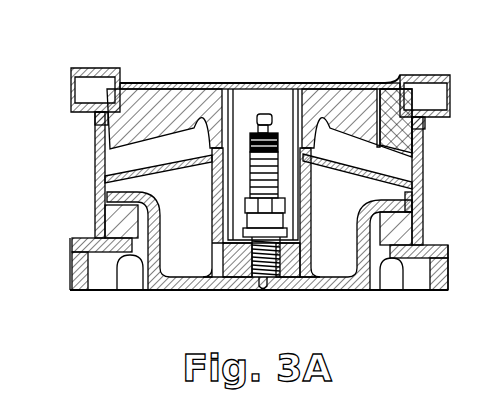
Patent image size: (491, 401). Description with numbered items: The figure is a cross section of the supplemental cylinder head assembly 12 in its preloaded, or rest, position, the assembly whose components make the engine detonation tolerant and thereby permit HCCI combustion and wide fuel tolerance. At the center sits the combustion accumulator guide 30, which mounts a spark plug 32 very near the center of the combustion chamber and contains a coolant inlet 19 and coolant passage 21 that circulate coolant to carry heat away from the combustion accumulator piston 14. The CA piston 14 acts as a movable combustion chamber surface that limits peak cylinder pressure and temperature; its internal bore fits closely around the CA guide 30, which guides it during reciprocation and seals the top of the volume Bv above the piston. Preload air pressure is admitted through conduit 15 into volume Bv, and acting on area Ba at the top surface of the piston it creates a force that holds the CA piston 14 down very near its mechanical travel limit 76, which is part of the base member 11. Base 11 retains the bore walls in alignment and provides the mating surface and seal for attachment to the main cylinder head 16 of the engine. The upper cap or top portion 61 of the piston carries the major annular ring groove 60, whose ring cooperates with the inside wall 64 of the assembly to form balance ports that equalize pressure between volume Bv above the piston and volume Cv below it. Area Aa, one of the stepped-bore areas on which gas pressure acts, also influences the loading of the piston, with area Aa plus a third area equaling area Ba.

The base member 11 is at (100, 230).
The cylinder head assembly 12 is at (333, 62).
The combustion accumulator piston 14 is at (156, 150).
The conduit 15 is at (388, 80).
The main cylinder head 16 is at (68, 273).
The coolant inlet 19 is at (78, 90).
The coolant passage 21 is at (213, 90).
The combustion accumulator guide 30 is at (327, 84).
The spark plug 32 is at (263, 104).
The major annular ring groove 60 is at (413, 202).
The upper cap or top portion 61 is at (413, 158).
The inside wall 64 is at (97, 161).
The mechanical travel limit 76 is at (145, 199).
The area at top surface of CA piston Ba is at (181, 143).
The volume above CA piston Bv is at (343, 153).
The volume below CA piston Cv is at (405, 212).
The area of CA piston Aa is at (348, 304).